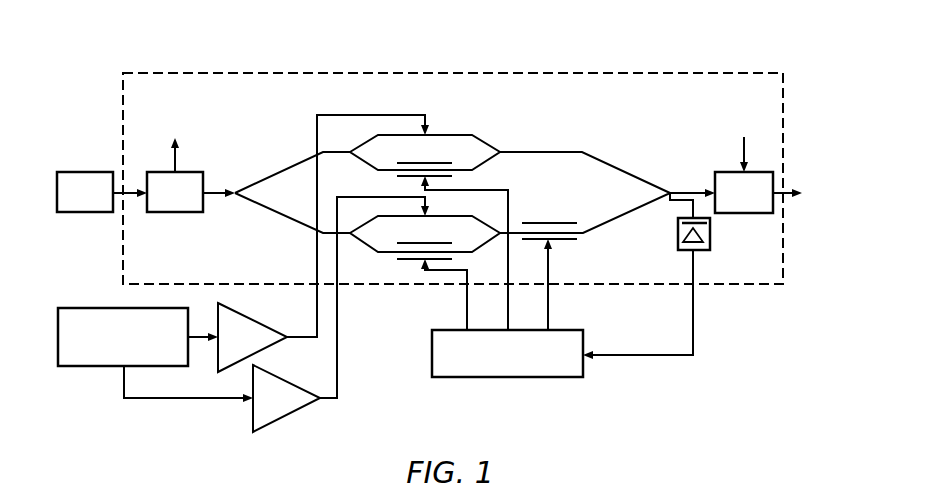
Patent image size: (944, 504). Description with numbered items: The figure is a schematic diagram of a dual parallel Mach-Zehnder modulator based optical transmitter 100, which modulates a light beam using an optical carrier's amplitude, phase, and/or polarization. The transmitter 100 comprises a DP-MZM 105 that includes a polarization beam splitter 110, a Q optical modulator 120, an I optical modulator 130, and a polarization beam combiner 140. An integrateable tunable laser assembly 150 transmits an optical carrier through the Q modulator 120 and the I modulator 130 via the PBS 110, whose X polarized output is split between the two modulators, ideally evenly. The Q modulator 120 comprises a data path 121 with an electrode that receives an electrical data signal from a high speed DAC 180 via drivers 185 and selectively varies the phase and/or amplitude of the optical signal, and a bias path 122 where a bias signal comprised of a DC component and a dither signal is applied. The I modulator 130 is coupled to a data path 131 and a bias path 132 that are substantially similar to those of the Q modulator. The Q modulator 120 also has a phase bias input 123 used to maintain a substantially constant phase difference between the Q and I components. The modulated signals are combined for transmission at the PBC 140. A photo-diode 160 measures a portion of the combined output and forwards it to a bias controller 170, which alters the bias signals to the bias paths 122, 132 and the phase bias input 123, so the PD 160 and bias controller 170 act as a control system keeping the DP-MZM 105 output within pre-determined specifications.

The DP-MZM based optical transmitter 100 is at (114, 41).
The DP-MZM 105 is at (783, 86).
The polarization beam splitter 110 is at (178, 212).
The Q optical modulator 120 is at (427, 237).
The data path 121 is at (451, 216).
The bias path 122 is at (432, 260).
The phase bias input 123 is at (566, 241).
The I optical modulator 130 is at (401, 143).
The data path 131 is at (451, 135).
The bias path 132 is at (406, 178).
The polarization beam combiner 140 is at (727, 172).
The integrateable tunable laser assembly 150 is at (88, 212).
The photo-diode 160 is at (710, 234).
The bias controller 170 is at (432, 352).
The high speed DAC 180 is at (92, 366).
The driver 185 is at (252, 319).